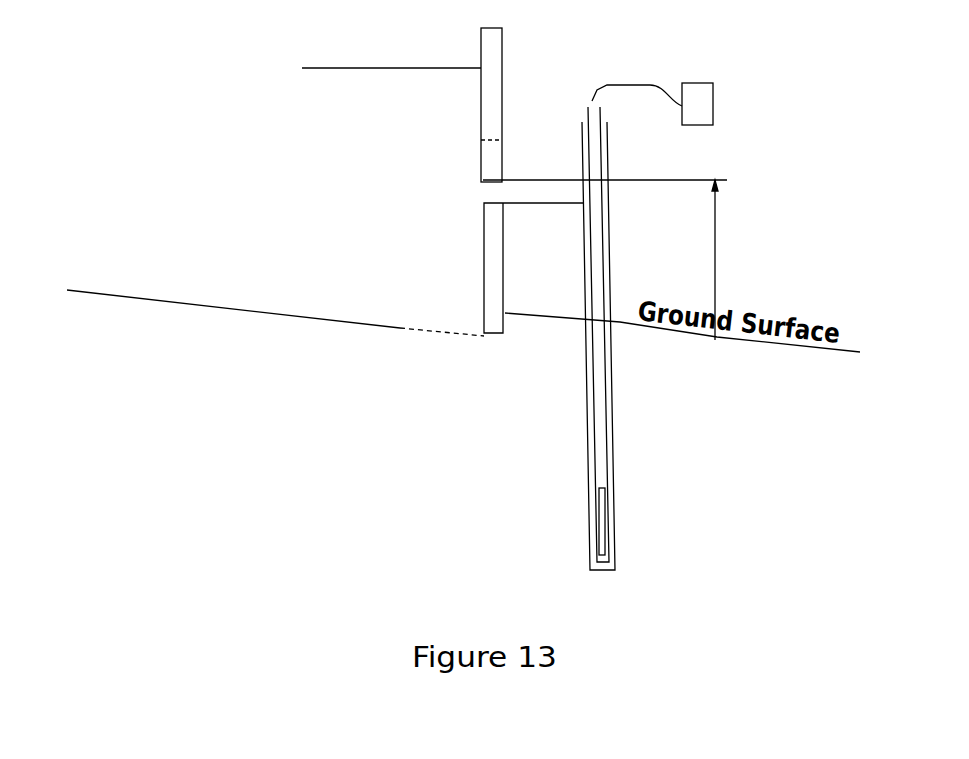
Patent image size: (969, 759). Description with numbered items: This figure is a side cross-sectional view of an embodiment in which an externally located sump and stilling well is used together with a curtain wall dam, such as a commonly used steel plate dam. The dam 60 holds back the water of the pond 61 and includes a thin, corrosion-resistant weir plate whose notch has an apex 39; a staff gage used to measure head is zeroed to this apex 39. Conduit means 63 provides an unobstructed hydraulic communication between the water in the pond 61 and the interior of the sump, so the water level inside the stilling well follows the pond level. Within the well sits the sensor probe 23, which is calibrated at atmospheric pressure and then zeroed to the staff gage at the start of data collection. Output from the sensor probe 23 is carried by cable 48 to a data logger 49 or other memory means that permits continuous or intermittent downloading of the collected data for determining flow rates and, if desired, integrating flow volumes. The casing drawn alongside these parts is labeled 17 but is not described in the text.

The apex 39 is at (500, 142).
The cable 48 is at (635, 87).
The data logger 49 is at (705, 105).
The pond 61 is at (336, 217).
The dam 60 is at (495, 275).
The conduit means 63 is at (557, 197).
The well casing 17 is at (613, 442).
The sensor probe 23 is at (605, 520).